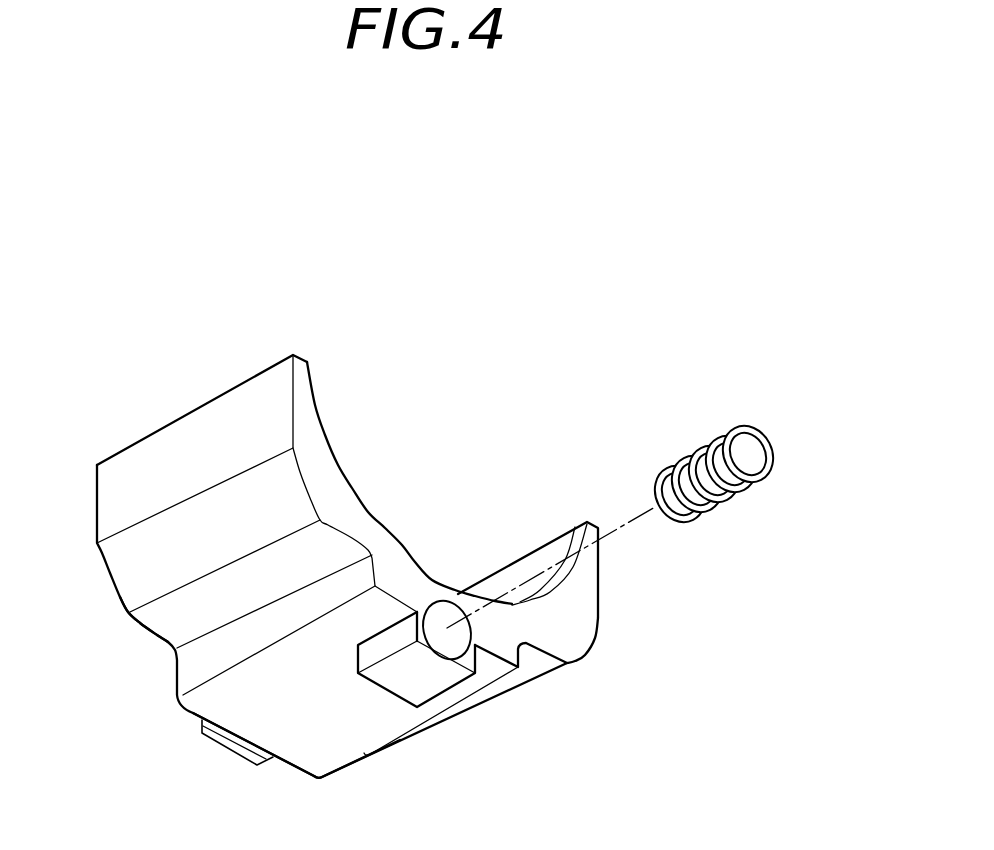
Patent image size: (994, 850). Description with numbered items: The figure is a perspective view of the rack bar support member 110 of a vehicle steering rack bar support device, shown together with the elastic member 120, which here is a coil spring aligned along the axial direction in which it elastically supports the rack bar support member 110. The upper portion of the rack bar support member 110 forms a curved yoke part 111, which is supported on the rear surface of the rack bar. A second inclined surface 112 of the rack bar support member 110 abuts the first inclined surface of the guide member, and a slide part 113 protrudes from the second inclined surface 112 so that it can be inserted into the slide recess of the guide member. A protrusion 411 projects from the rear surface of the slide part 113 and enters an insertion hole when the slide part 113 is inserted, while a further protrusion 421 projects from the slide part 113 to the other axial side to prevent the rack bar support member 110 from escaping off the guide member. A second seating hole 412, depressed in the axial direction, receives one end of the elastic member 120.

The rack bar support member 110 is at (170, 362).
The yoke part 111 is at (535, 558).
The second inclined surface 112 is at (172, 617).
The slide part 113 is at (298, 740).
The elastic member 120 is at (723, 422).
The protrusion 411 is at (398, 688).
The second seating hole 412 is at (442, 639).
The protrusion 421 is at (238, 747).